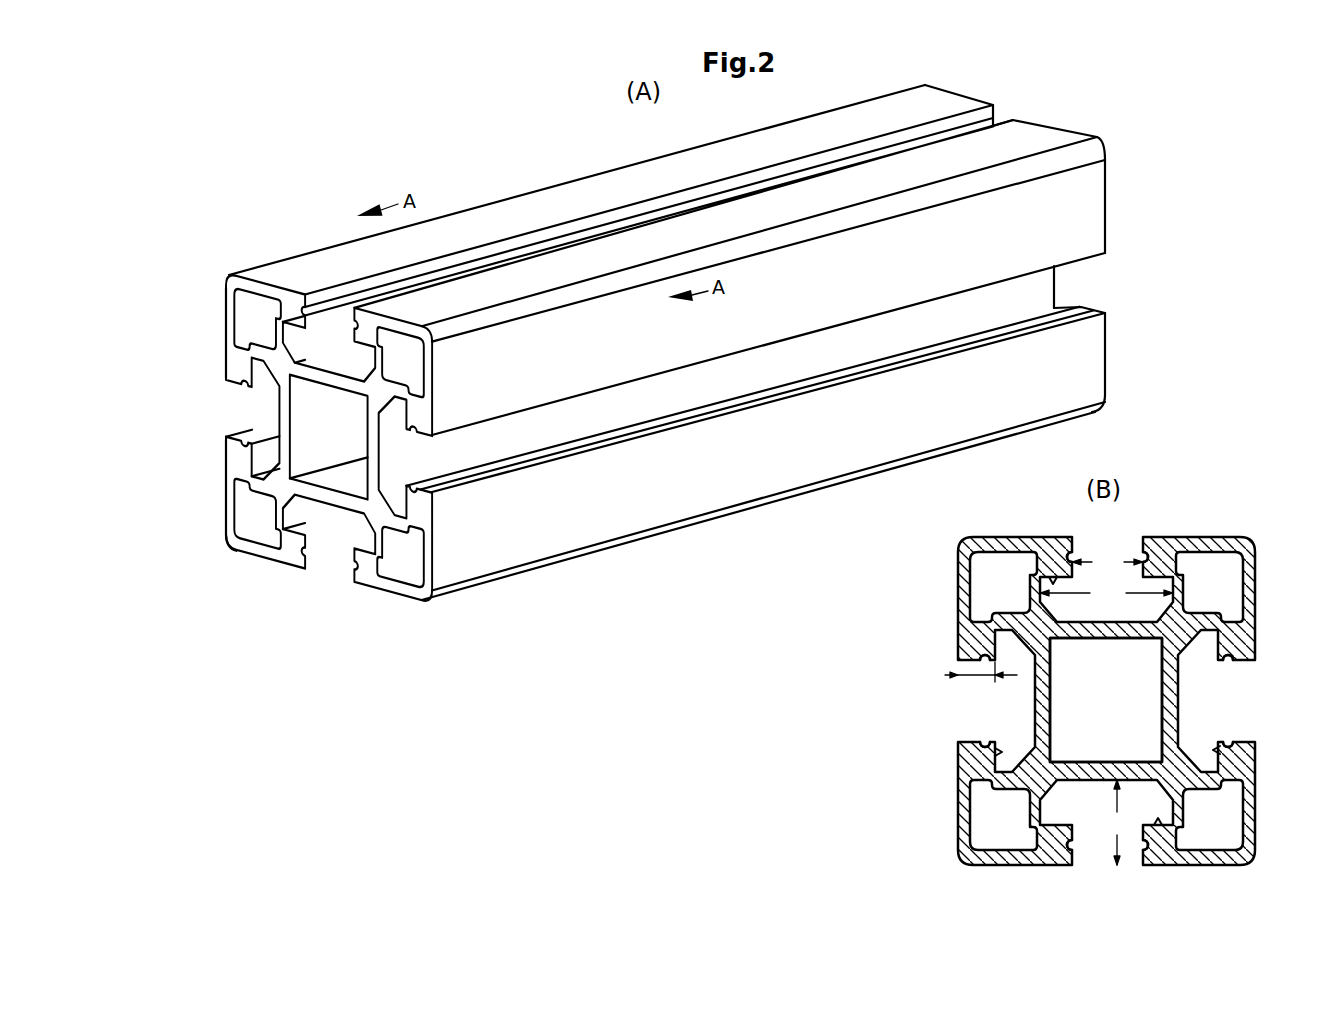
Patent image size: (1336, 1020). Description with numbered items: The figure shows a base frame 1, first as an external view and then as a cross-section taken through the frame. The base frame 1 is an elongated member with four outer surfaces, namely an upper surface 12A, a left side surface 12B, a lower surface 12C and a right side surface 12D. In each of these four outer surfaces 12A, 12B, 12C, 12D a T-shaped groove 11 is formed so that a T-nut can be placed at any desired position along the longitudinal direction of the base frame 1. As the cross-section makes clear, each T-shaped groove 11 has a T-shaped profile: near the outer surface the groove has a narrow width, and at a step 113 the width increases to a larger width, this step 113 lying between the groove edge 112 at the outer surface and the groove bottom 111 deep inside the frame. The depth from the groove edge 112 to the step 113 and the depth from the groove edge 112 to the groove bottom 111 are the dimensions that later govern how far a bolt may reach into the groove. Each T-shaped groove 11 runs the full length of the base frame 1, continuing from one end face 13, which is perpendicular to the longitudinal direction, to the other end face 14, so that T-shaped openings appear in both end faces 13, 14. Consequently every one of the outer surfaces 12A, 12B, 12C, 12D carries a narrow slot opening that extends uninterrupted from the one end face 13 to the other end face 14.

The base frame 1 is at (1137, 82).
The T-shaped groove 11 is at (1006, 111).
The upper surface 12A is at (486, 216).
The left side surface 12B is at (223, 511).
The lower surface 12C is at (387, 598).
The right side surface 12D is at (553, 526).
The end face 13 is at (233, 546).
The end face 14 is at (1108, 204).
The groove bottom 111 is at (1107, 626).
The groove edge 112 is at (1067, 550).
The step 113 is at (1052, 575).